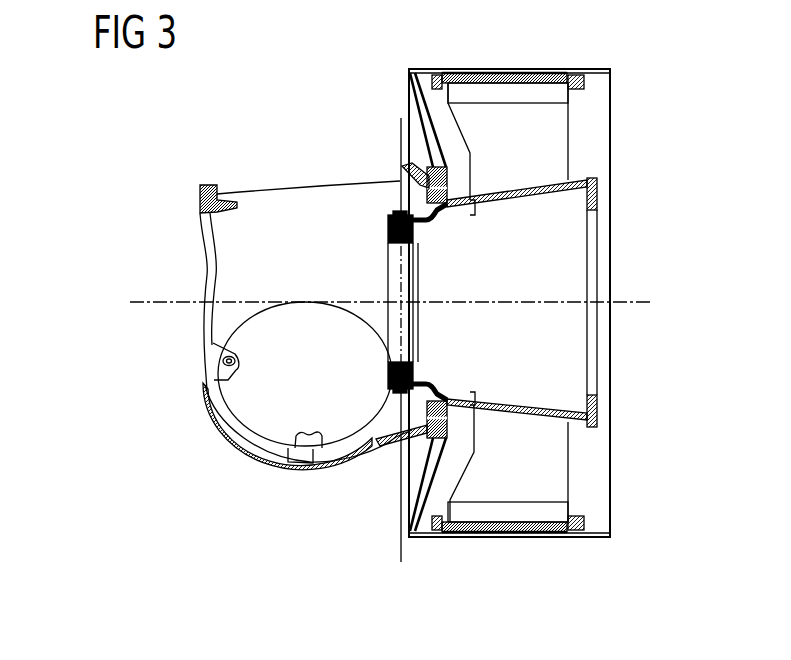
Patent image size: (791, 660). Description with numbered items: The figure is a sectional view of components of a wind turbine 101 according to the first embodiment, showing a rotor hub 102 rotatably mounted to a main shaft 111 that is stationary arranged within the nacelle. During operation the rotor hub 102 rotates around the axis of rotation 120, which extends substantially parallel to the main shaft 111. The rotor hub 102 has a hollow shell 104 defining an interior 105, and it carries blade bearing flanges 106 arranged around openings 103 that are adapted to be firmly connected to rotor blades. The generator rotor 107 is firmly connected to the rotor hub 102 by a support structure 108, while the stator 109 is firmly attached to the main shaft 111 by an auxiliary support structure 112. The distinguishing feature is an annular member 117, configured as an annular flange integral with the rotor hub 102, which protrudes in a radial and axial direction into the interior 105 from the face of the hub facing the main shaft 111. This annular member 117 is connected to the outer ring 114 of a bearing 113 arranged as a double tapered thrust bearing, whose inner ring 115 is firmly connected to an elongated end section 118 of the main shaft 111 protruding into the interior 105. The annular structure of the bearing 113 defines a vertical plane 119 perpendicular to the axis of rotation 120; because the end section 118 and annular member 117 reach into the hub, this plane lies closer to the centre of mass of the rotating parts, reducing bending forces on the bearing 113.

The wind turbine 101 is at (204, 155).
The rotor hub 102 is at (256, 468).
The openings 103 is at (255, 398).
The hollow shell 104 is at (216, 270).
The interior 105 is at (278, 290).
The blade bearing flanges 106 is at (212, 371).
The rotor 107 is at (510, 538).
The support structure 108 is at (413, 497).
The stator 109 is at (513, 75).
The main shaft 111 is at (548, 408).
The auxiliary support structure 112 is at (455, 118).
The bearing 113 is at (384, 212).
The outer ring 114 is at (392, 430).
The inner ring 115 is at (415, 373).
The annular member 117 is at (400, 211).
The end section of the main shaft 118 is at (420, 243).
The vertical plane 119 is at (400, 541).
The axis of rotation 120 is at (133, 304).